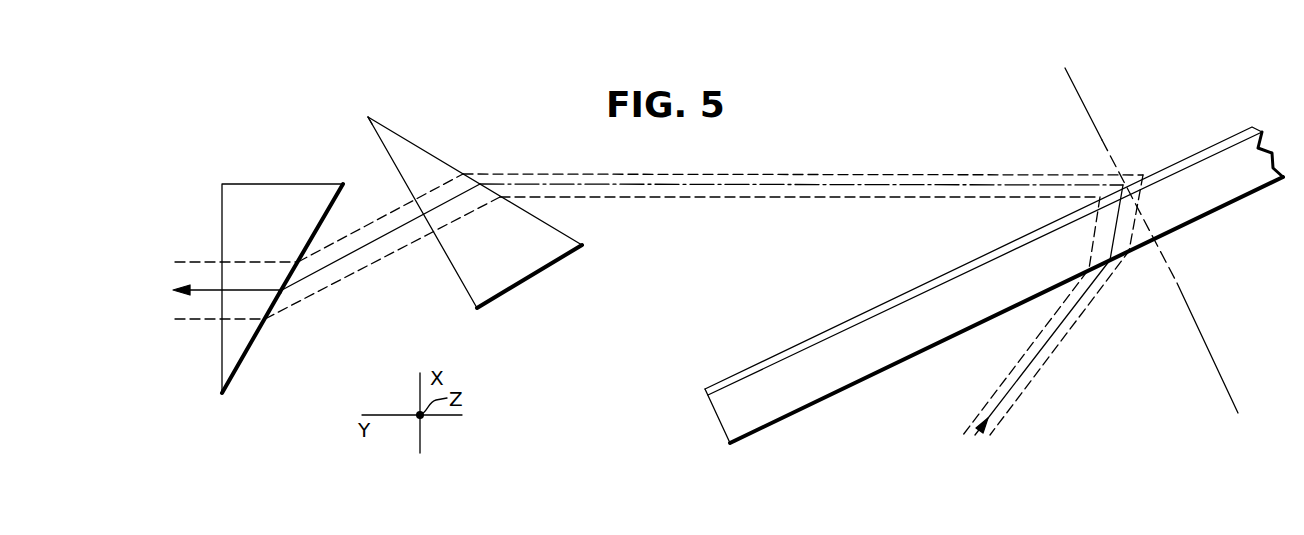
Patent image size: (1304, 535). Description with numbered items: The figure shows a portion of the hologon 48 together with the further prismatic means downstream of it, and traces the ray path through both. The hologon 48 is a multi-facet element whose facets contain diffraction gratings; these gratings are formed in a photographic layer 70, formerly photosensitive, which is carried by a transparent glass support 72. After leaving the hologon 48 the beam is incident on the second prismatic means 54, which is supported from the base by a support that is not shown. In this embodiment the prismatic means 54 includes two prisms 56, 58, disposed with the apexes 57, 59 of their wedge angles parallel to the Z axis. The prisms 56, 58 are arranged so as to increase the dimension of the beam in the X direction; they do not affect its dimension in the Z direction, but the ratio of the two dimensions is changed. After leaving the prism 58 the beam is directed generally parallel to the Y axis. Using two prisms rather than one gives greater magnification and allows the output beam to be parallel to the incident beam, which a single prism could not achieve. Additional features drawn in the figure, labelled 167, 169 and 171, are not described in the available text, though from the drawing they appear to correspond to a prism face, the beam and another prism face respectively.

The hologon 48 is at (994, 272).
The second prismatic means 54 is at (298, 283).
The prism 56 is at (481, 190).
The apex 57 is at (368, 117).
The prism 58 is at (243, 339).
The apex 59 is at (222, 395).
The photographic layer 70 is at (791, 351).
The transparent glass support 72 is at (858, 360).
The entrance face of second prism 167 is at (437, 158).
The light beam 169 is at (764, 186).
The reflective face of first prism 171 is at (337, 204).